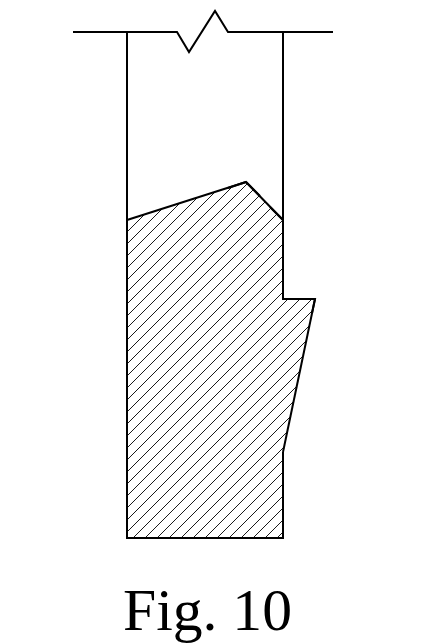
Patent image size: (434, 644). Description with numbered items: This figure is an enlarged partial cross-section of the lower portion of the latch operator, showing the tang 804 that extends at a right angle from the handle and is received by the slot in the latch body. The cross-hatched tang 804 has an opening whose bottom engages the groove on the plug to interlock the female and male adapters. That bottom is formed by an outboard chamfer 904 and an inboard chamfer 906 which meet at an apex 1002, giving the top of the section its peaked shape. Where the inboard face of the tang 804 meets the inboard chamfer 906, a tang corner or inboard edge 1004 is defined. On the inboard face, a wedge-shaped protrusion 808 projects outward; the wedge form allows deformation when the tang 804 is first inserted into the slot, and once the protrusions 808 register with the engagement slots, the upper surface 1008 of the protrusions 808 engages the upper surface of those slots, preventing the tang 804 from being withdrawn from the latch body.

The tang 804 is at (127, 350).
The protrusions 808 is at (301, 368).
The outboard chamfer 904 is at (165, 207).
The inboard chamfer 906 is at (263, 200).
The apex 1002 is at (245, 181).
The tang corner 1004 is at (284, 218).
The upper surface of the protrusions 1008 is at (300, 298).